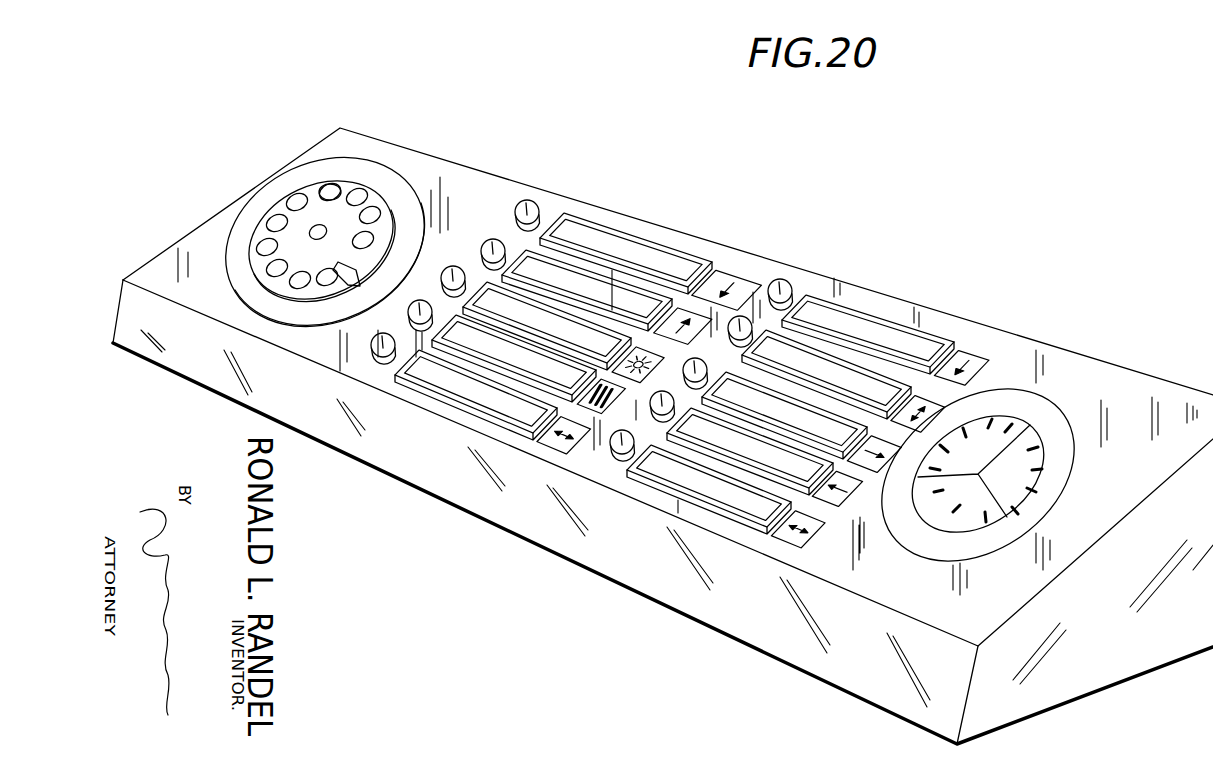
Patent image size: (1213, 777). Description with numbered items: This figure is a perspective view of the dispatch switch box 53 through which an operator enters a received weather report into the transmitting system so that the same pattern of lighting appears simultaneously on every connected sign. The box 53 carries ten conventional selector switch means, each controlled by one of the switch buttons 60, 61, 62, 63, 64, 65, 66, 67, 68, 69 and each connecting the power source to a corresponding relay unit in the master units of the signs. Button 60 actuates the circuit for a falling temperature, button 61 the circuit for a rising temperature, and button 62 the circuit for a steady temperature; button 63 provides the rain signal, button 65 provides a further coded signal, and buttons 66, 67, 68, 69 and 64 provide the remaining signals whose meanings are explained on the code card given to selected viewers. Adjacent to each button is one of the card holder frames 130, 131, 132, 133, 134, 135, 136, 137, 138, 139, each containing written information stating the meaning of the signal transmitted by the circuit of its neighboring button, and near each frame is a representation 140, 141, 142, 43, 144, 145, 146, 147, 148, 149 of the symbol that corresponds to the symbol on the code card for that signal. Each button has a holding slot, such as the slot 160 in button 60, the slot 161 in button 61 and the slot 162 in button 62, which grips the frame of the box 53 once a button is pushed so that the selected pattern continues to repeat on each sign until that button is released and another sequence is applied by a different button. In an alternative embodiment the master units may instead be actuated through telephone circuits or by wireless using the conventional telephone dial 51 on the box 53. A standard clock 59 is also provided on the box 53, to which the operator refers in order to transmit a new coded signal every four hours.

The dispatch switch box 53 is at (313, 147).
The telephone dial 51 is at (238, 291).
The standard clock 59 is at (1005, 534).
The switch button 60 is at (516, 208).
The switch button 61 is at (482, 250).
The switch button 62 is at (442, 277).
The switch button 63 is at (411, 301).
The switch button 64 is at (374, 336).
The switch button 65 is at (769, 288).
The switch button 66 is at (729, 324).
The switch button 67 is at (685, 365).
The switch button 68 is at (651, 400).
The switch button 69 is at (610, 445).
The card holder frame 130 is at (607, 231).
The card holder frame 131 is at (603, 280).
The card holder frame 132 is at (601, 327).
The card holder frame 133 is at (462, 346).
The card holder frame 134 is at (466, 403).
The card holder frame 135 is at (834, 310).
The card holder frame 136 is at (826, 358).
The card holder frame 137 is at (849, 422).
The card holder frame 138 is at (712, 438).
The card holder frame 139 is at (750, 513).
The symbol representation 140 is at (731, 277).
The symbol representation 141 is at (686, 323).
The symbol representation 142 is at (647, 364).
The hatched rain indicator 43 is at (622, 402).
The symbol representation 144 is at (548, 438).
The symbol representation 145 is at (962, 378).
The symbol representation 146 is at (936, 398).
The symbol representation 147 is at (866, 412).
The symbol representation 148 is at (838, 494).
The symbol representation 149 is at (800, 539).
The holding slot 160 is at (533, 229).
The holding slot 161 is at (504, 273).
The holding slot 162 is at (464, 305).